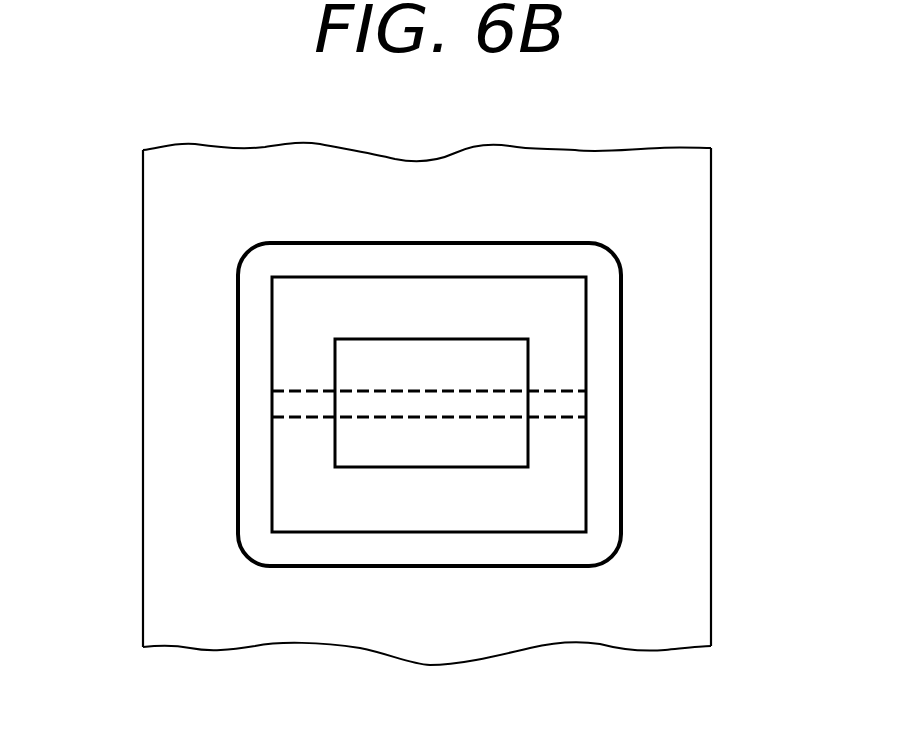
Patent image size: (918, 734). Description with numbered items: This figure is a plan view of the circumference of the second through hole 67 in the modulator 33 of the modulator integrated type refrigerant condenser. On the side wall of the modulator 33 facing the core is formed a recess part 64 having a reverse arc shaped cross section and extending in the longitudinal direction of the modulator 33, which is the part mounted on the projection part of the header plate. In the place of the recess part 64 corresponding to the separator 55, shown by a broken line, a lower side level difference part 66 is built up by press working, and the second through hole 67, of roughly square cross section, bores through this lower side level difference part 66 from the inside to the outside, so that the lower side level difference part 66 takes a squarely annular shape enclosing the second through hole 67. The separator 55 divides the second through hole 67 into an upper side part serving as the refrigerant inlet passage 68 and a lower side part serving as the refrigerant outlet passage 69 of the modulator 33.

The modulator 33 is at (143, 363).
The separator 55 is at (423, 402).
The recess part 64 is at (575, 200).
The lower side level difference part 66 is at (558, 313).
The second through hole 67 is at (810, 330).
The refrigerant inlet passage 68 is at (501, 370).
The refrigerant outlet passage 69 is at (501, 448).